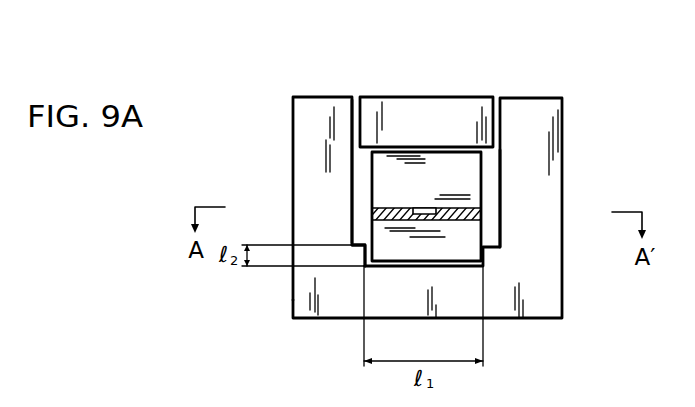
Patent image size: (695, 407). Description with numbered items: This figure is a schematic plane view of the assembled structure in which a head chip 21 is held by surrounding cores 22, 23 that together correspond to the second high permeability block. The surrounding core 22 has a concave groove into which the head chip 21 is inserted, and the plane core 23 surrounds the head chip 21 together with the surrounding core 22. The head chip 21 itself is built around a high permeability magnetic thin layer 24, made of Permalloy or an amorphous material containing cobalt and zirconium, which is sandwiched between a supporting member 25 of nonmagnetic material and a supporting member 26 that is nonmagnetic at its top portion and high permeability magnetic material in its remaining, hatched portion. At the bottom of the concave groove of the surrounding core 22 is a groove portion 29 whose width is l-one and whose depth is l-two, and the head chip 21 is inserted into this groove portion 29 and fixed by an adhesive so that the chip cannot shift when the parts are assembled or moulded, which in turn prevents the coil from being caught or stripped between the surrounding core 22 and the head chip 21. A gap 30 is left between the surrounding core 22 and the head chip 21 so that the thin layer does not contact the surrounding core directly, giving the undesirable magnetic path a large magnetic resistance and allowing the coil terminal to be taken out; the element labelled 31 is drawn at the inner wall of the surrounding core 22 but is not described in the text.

The head chip 21 is at (465, 247).
The surrounding core 22 is at (313, 145).
The plane core 23 is at (388, 113).
The high permeability magnetic thin layer 24 is at (425, 211).
The supporting member 25 is at (465, 185).
The supporting member 26 is at (443, 242).
The groove portion 29 is at (363, 262).
The gap 30 is at (490, 219).
The inner side wall 31 is at (360, 192).